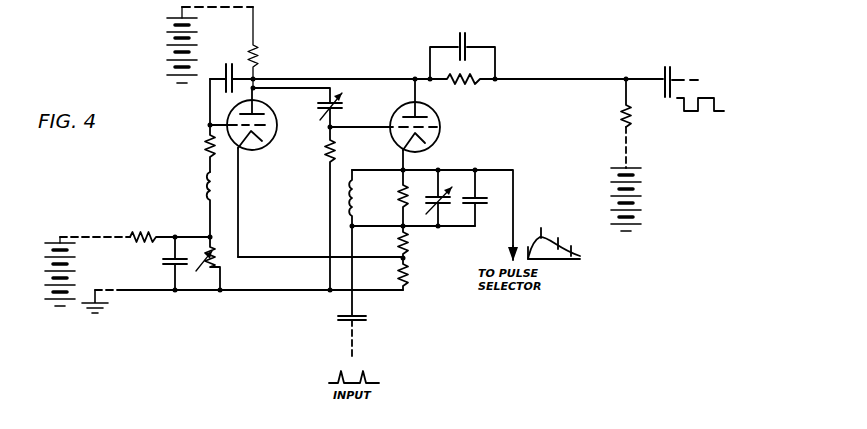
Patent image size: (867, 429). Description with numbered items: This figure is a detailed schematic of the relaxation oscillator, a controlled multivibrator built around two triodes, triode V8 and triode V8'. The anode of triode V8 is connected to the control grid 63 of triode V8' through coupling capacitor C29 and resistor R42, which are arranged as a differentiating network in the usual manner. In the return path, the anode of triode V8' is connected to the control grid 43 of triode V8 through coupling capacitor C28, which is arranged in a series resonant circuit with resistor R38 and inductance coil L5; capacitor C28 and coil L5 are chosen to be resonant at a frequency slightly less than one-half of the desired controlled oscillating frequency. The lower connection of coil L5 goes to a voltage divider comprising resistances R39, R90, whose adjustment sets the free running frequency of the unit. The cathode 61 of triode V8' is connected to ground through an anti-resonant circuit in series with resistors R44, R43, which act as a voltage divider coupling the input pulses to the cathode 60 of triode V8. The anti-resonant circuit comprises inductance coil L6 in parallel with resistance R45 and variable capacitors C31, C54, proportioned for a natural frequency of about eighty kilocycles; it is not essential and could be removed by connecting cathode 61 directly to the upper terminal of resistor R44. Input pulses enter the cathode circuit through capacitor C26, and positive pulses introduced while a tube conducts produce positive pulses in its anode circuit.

The coupling capacitor C28 is at (226, 70).
The control grid 43 is at (210, 125).
The cathode 60 is at (276, 133).
The triode V8 is at (253, 202).
The resistor R38 is at (205, 144).
The inductance coil L5 is at (203, 181).
The resistance R39 is at (135, 233).
The resistance R90 is at (200, 263).
The coupling capacitor C29 is at (341, 106).
The resistor R42 is at (325, 152).
The control grid 63 is at (352, 128).
The cathode 61 is at (427, 141).
The triode V8' is at (427, 160).
The inductance coil L6 is at (354, 194).
The resistance R45 is at (398, 204).
The resistor R44 is at (398, 245).
The resistor R43 is at (398, 270).
The variable capacitor C54 is at (429, 208).
The variable capacitor C31 is at (487, 202).
The input coupling capacitor C26 is at (366, 318).